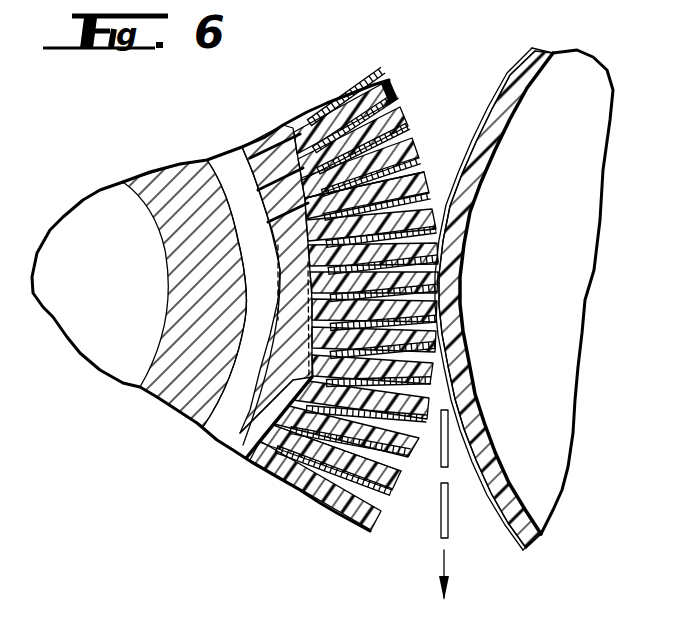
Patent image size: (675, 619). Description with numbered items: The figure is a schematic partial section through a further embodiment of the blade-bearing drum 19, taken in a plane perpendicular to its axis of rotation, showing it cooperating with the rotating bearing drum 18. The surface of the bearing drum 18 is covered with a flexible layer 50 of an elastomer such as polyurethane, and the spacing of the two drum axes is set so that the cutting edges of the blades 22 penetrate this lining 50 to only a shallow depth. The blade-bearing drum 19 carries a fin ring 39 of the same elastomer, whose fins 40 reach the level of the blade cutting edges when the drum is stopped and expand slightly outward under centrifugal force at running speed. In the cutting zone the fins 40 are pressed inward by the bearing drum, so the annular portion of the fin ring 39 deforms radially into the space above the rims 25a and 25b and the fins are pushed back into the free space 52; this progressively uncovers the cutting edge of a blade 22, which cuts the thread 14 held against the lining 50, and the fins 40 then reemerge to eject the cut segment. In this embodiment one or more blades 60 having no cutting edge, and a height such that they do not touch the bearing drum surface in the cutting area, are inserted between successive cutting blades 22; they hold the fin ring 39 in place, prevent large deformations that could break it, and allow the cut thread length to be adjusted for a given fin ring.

The thread 14 is at (500, 85).
The bearing drum 18 is at (505, 310).
The blade-bearing drum 19 is at (138, 299).
The blade 22 is at (402, 132).
The rim 25a is at (182, 271).
The rim 25b is at (172, 202).
The fin ring 39 is at (278, 208).
The fin 40 is at (417, 180).
The flexible layer (lining) 50 is at (522, 90).
The free space 52 is at (250, 360).
The blade without cutting edge 60 is at (386, 80).